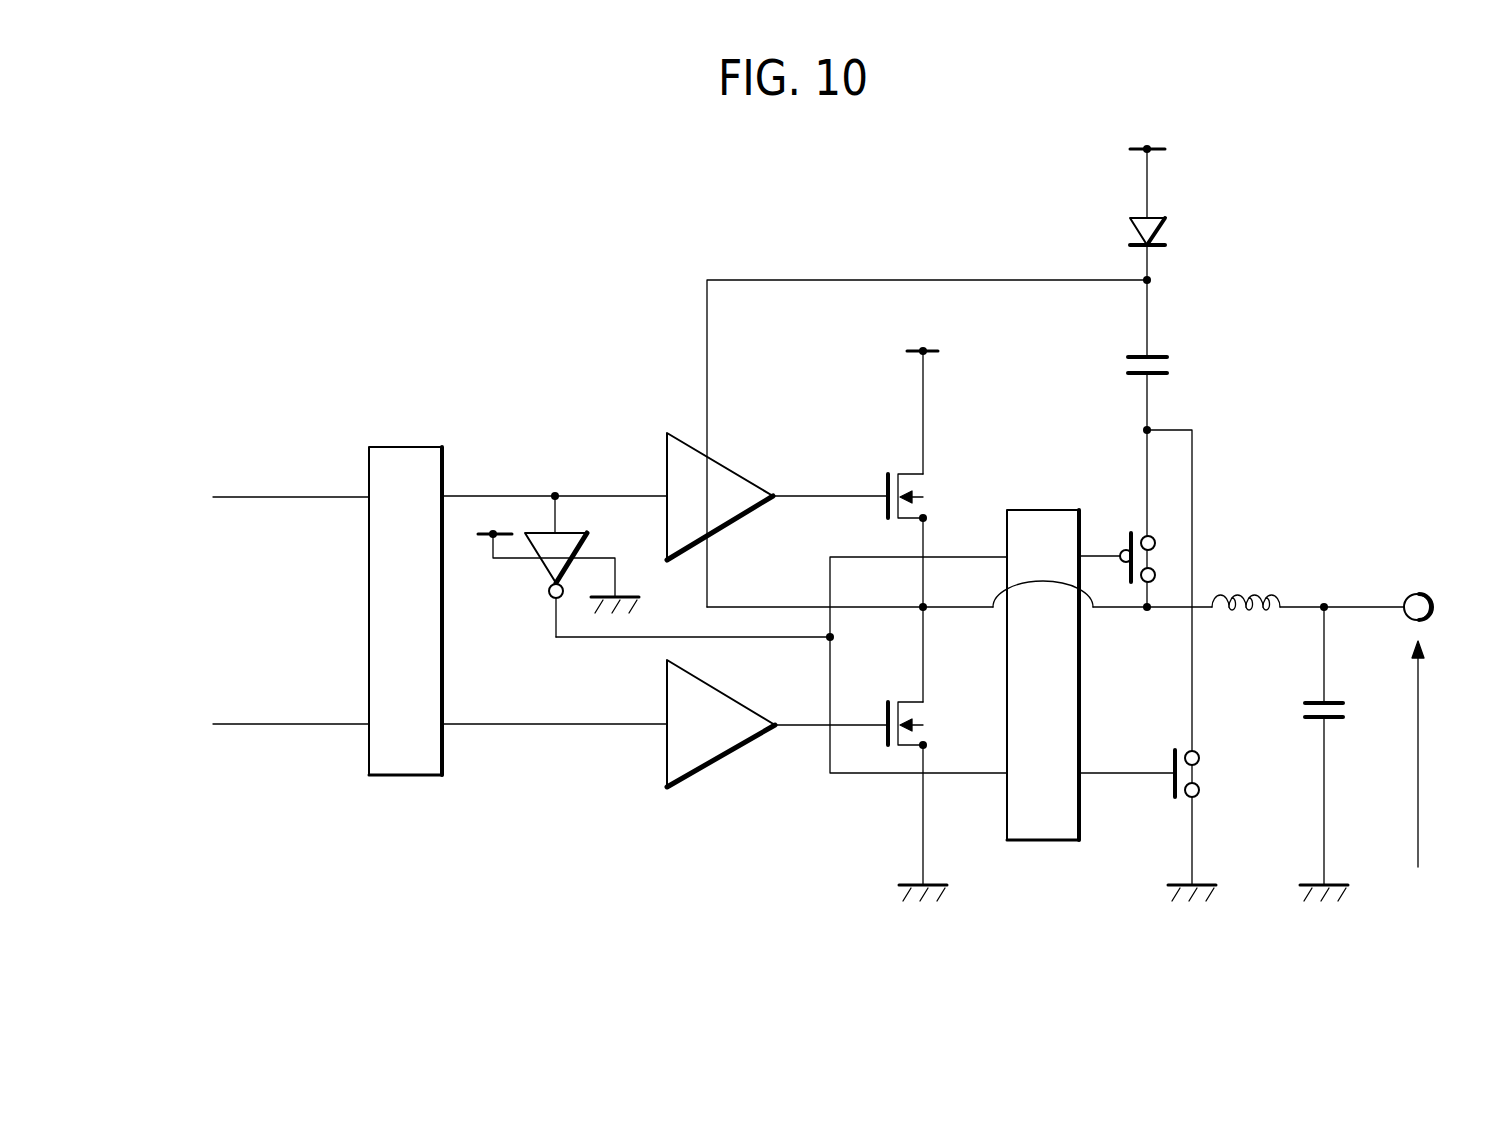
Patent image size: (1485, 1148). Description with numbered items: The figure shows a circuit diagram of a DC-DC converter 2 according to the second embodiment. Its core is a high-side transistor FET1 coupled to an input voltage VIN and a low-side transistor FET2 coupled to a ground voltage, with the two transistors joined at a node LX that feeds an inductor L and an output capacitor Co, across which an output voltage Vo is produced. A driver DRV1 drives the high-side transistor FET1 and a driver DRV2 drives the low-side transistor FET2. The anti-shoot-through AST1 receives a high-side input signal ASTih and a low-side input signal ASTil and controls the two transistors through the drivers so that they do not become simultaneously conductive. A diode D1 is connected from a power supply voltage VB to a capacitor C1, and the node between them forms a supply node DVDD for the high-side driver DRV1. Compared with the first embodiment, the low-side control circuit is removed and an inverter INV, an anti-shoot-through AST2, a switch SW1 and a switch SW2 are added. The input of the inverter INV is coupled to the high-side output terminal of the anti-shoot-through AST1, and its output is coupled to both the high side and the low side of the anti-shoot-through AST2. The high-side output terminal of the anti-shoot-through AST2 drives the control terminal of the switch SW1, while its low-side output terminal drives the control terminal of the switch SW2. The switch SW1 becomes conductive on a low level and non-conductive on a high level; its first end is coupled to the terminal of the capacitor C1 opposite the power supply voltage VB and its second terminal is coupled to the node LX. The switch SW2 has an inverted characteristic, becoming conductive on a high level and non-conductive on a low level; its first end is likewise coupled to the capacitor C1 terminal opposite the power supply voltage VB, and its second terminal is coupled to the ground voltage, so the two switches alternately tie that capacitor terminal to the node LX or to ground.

The DC-DC converter 2 is at (884, 200).
The anti-shoot-through AST1 is at (369, 452).
The anti-shoot-through AST2 is at (1050, 843).
The driver DRV1 is at (686, 438).
The driver DRV2 is at (683, 782).
The inverter INV is at (543, 563).
The high-side transistor FET1 is at (942, 538).
The low-side transistor FET2 is at (945, 754).
The switch SW1 is at (1117, 540).
The switch SW2 is at (1147, 806).
The diode D1 is at (1169, 287).
The capacitor C1 is at (1168, 618).
The inductor L is at (1308, 586).
The capacitor Co is at (1347, 754).
The high-side input signal ASTih is at (249, 497).
The low-side input signal ASTil is at (249, 725).
The driver supply node DVDD is at (707, 298).
The node LX is at (959, 665).
The input voltage VIN is at (919, 393).
The power supply voltage VB is at (1144, 163).
The output voltage Vo is at (1430, 730).